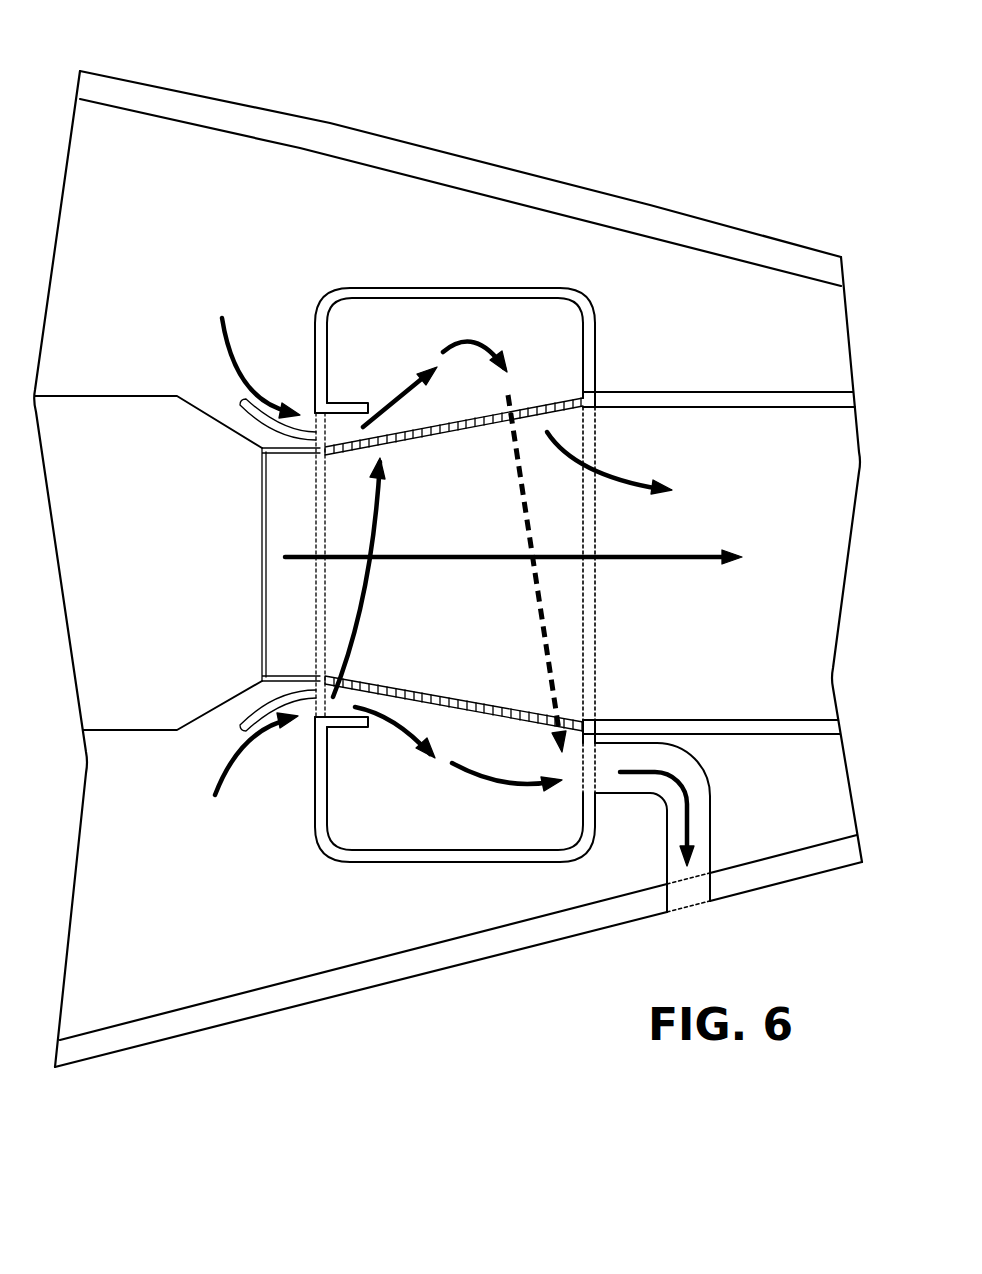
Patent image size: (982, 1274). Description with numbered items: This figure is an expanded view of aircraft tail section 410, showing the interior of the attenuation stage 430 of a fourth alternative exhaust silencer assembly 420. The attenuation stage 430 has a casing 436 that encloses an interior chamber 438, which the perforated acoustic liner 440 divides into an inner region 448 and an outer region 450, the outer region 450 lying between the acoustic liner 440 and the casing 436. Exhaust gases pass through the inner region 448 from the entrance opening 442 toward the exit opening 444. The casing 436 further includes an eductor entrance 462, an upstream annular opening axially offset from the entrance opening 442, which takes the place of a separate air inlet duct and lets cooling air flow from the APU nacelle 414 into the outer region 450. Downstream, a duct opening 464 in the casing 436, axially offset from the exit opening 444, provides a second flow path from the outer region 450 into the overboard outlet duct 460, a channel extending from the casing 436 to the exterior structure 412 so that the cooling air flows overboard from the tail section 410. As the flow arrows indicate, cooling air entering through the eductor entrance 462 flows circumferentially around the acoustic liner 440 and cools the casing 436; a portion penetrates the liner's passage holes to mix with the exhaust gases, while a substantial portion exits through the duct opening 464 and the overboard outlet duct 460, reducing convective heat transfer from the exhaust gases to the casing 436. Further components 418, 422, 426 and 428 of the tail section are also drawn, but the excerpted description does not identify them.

The aircraft tail section 410 is at (575, 90).
The exterior structure 412 is at (328, 122).
The APU nacelle 414 is at (180, 165).
The inlet lip 418 is at (244, 405).
The exhaust silencer assembly 420 is at (435, 892).
The liner wall 422 is at (722, 392).
The core inlet duct 426 is at (126, 428).
The core flow direction 428 is at (708, 552).
The attenuation stage 430 is at (452, 283).
The casing 436 is at (360, 293).
The interior chamber 438 is at (560, 337).
The acoustic liner 440 is at (433, 437).
The entrance opening 442 is at (305, 643).
The exit opening 444 is at (599, 633).
The inner region 448 is at (438, 616).
The outer region 450 is at (360, 358).
The overboard outlet duct 460 is at (710, 790).
The eductor entrance 462 is at (302, 398).
The duct opening 464 is at (600, 785).